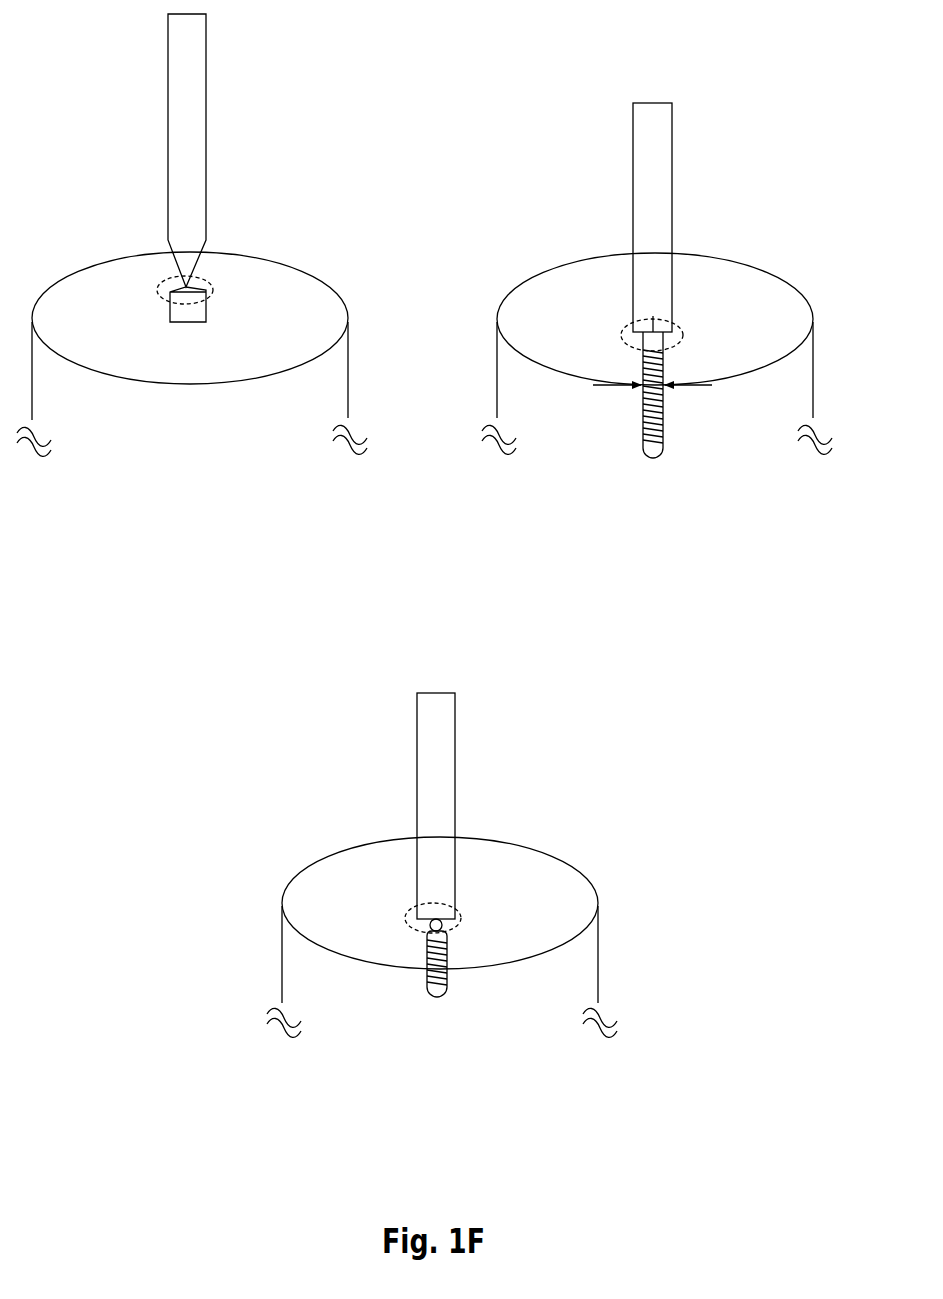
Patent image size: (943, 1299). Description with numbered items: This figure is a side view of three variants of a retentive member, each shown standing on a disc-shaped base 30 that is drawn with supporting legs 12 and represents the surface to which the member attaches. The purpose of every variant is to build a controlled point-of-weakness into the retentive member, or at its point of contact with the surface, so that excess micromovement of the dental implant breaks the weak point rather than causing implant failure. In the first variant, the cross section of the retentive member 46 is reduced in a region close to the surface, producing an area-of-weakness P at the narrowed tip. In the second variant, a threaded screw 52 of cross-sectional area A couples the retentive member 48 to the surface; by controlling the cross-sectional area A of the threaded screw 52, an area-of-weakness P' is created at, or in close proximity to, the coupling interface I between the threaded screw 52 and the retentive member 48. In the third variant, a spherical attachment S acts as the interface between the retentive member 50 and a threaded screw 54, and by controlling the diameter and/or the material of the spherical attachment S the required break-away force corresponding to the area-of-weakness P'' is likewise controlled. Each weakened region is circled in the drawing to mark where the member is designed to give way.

The support legs / base 12 is at (358, 360).
The platform disk 30 is at (107, 285).
The retentive member 46 is at (196, 106).
The area-of-weakness P is at (209, 299).
The retentive member 48 is at (672, 190).
The coupling interface I is at (653, 316).
The area-of-weakness P' is at (678, 338).
The cross-sectional area A is at (652, 401).
The threaded screw 52 is at (663, 436).
The retentive member 50 is at (455, 782).
The spherical attachment S is at (420, 930).
The area-of-weakness P'' is at (464, 919).
The threaded screw 54 is at (447, 985).